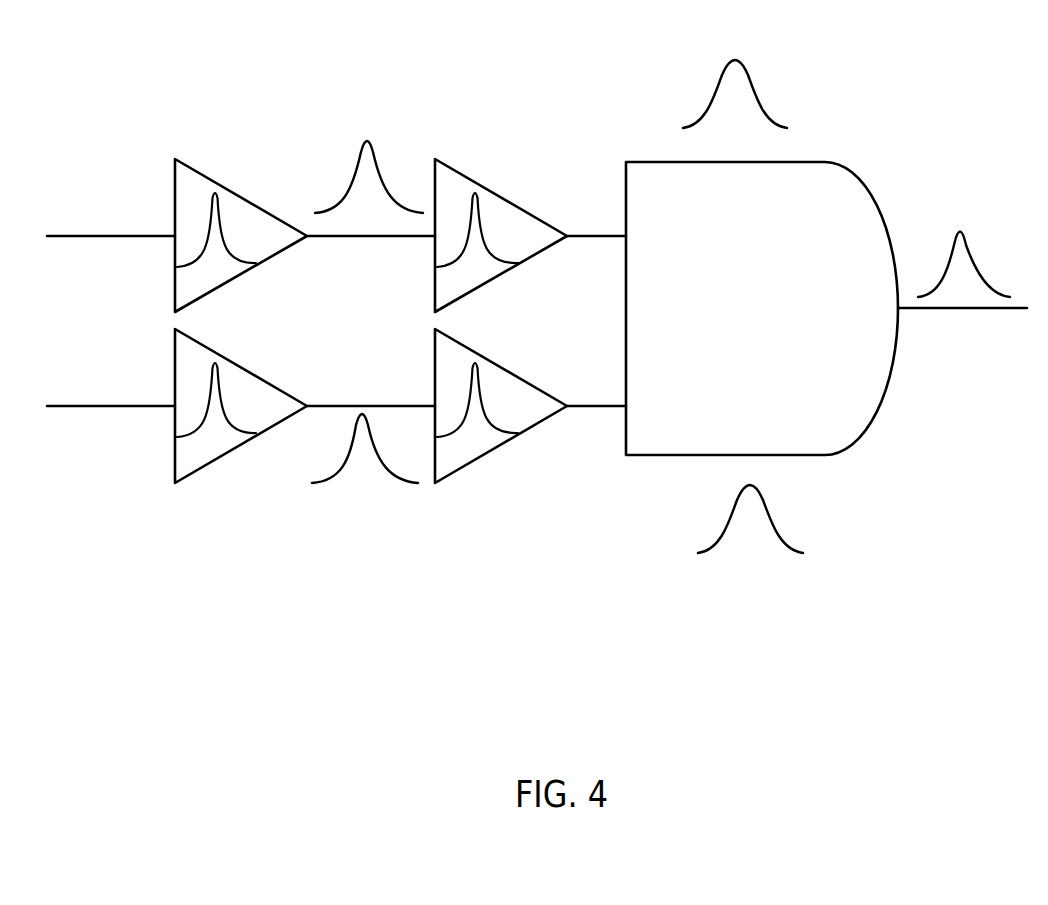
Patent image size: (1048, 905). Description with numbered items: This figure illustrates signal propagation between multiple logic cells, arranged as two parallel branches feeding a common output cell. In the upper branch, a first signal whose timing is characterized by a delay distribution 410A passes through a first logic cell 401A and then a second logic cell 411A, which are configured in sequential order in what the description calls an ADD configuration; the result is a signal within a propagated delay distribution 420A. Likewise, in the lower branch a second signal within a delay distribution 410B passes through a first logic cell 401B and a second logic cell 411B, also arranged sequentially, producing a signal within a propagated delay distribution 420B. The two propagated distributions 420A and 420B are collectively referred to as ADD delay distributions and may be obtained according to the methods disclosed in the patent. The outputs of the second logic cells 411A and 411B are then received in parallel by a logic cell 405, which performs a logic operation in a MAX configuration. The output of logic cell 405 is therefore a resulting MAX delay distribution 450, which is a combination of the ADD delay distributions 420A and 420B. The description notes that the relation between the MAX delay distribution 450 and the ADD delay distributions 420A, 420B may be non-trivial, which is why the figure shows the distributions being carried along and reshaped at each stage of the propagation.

The first logic cell 401A is at (173, 177).
The first logic cell 401B is at (173, 472).
The delay distribution 410A is at (357, 182).
The delay distribution 410B is at (380, 463).
The second logic cell 411A is at (462, 173).
The second logic cell 411B is at (458, 472).
The logic cell 405 is at (783, 327).
The propagated delay distribution 420A is at (753, 87).
The propagated delay distribution 420B is at (770, 522).
The MAX delay distribution 450 is at (970, 238).